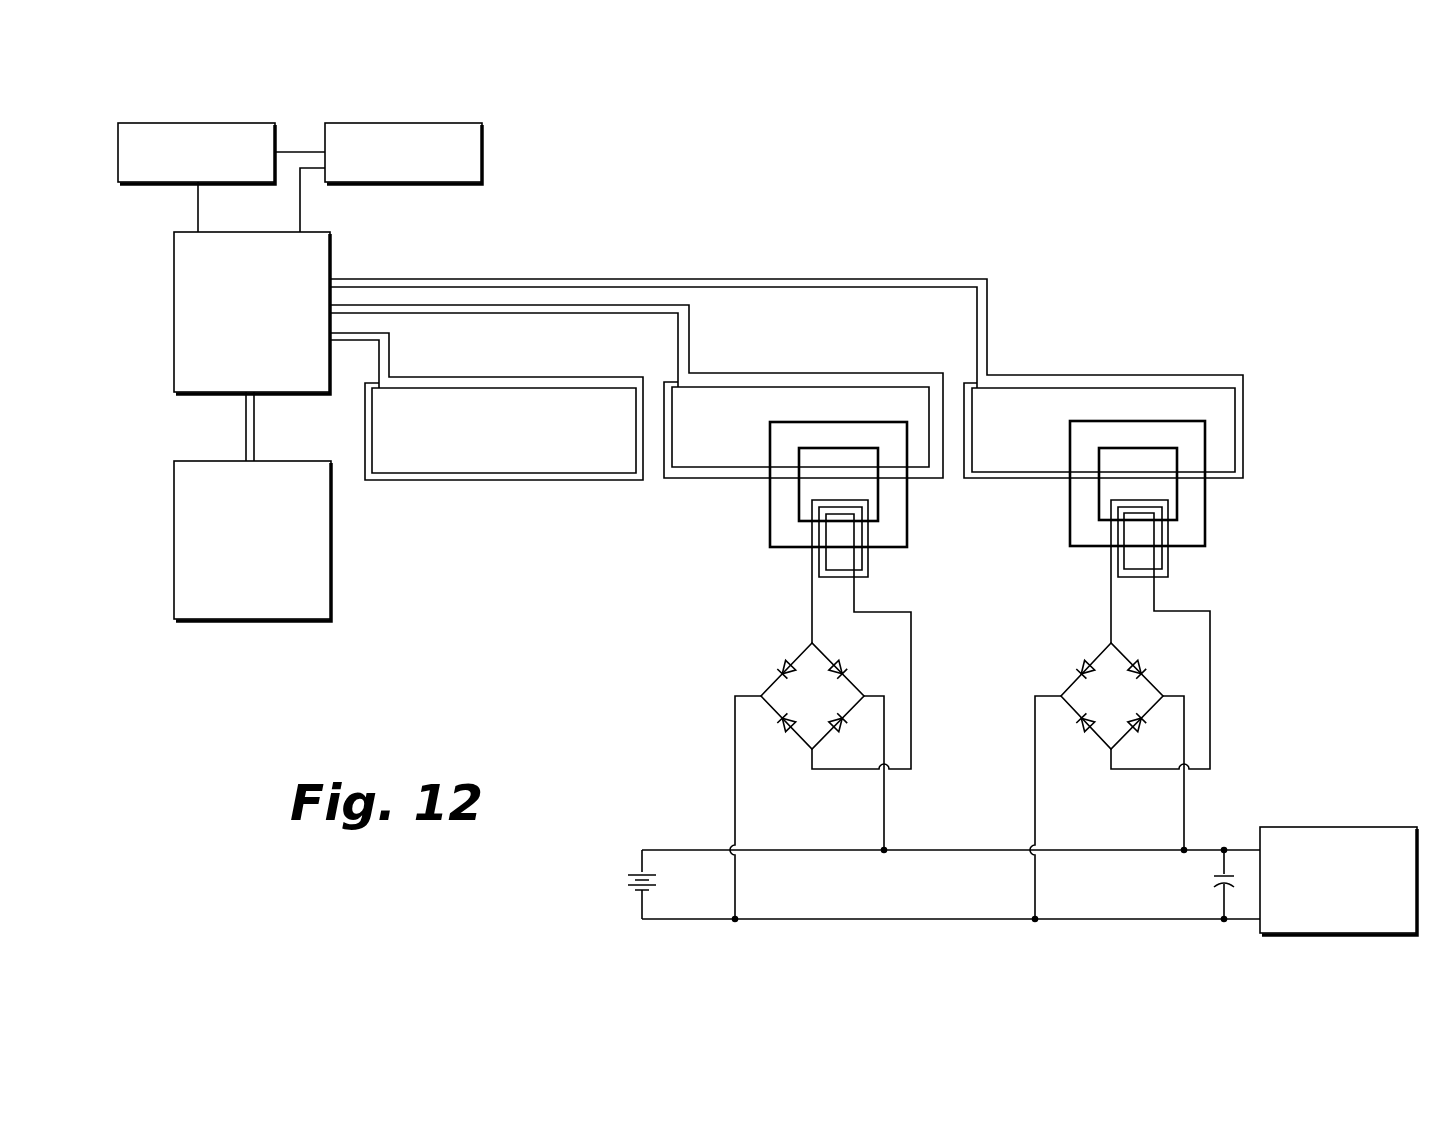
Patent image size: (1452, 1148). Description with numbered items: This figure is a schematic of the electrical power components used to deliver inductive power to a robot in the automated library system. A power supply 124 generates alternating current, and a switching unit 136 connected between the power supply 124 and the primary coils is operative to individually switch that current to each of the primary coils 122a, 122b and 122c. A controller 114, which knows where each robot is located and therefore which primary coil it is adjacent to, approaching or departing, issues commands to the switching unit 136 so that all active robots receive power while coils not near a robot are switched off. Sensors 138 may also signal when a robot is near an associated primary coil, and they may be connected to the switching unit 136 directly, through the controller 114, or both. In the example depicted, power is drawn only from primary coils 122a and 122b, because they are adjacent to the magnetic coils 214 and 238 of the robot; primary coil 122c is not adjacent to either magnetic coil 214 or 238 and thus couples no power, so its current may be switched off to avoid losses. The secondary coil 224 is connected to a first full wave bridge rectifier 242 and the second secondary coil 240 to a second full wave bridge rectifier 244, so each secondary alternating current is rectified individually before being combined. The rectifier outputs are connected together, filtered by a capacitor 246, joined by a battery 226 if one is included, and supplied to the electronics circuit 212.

The controller 114 is at (153, 185).
The sensors 138 is at (483, 152).
The switching unit 136 is at (174, 315).
The power supply 124 is at (174, 582).
The primary coil 122c is at (490, 370).
The primary coil 122b is at (790, 362).
The primary coil 122a is at (1078, 358).
The magnetic coil 238 is at (890, 497).
The magnetic coil 214 is at (1192, 497).
The second secondary coil 240 is at (878, 570).
The secondary coil 224 is at (1180, 568).
The second full wave bridge rectifier 244 is at (770, 660).
The first full wave bridge rectifier 242 is at (1072, 660).
The battery 226 is at (618, 880).
The capacitor 246 is at (1205, 878).
The electronics circuit 212 is at (1318, 827).